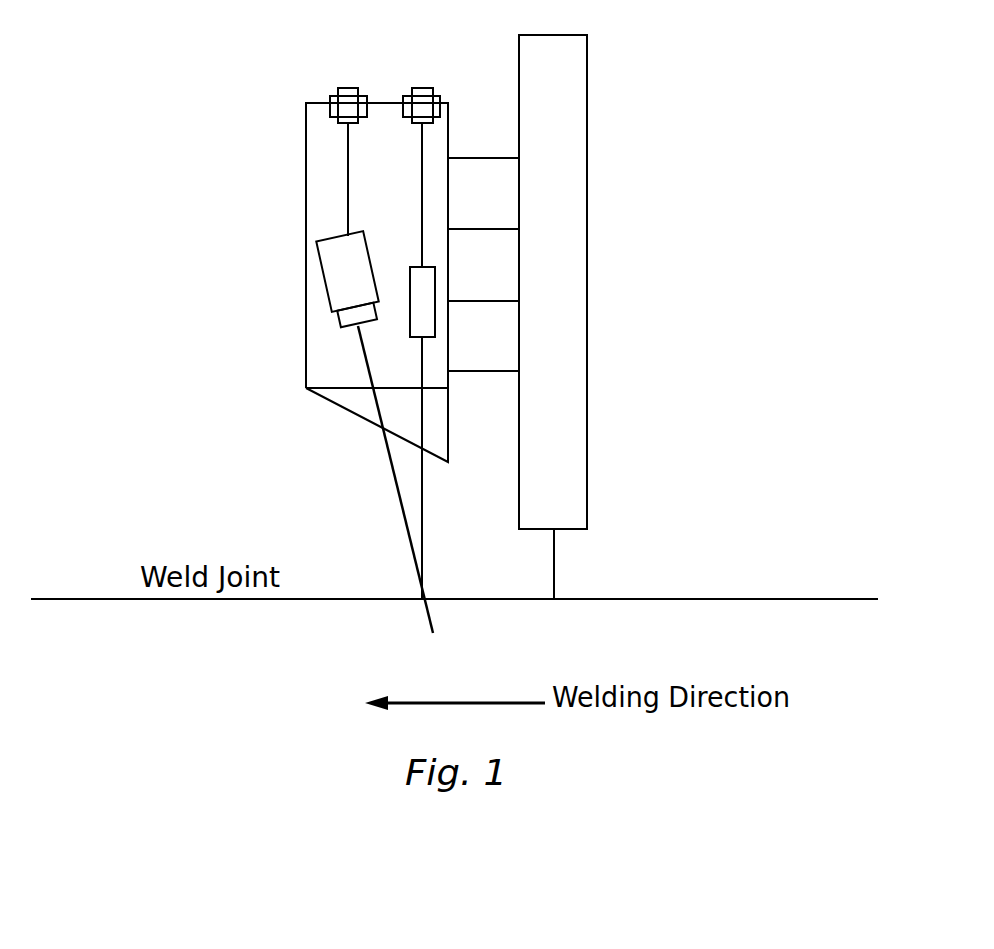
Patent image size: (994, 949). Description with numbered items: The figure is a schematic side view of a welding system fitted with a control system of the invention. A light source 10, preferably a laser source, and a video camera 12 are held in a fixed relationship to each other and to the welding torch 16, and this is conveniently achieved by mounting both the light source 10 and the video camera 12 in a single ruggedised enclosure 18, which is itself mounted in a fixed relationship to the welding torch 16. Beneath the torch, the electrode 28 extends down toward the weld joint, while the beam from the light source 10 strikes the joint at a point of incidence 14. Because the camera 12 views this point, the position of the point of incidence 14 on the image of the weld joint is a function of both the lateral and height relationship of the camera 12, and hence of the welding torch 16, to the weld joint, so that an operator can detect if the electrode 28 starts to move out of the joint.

The light source 10 is at (435, 289).
The video camera 12 is at (322, 265).
The point of incidence 14 is at (422, 600).
The welding torch 16 is at (587, 328).
The ruggedised enclosure 18 is at (306, 365).
The electrode 28 is at (554, 577).